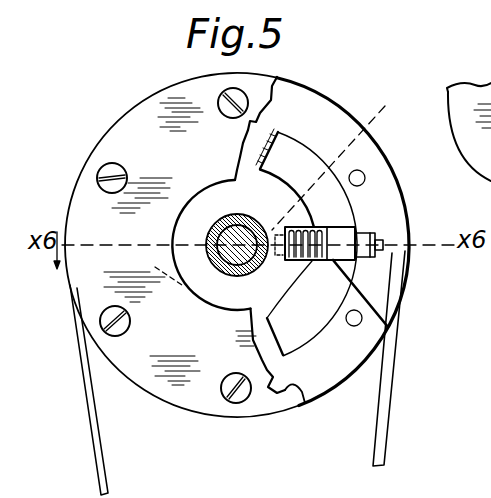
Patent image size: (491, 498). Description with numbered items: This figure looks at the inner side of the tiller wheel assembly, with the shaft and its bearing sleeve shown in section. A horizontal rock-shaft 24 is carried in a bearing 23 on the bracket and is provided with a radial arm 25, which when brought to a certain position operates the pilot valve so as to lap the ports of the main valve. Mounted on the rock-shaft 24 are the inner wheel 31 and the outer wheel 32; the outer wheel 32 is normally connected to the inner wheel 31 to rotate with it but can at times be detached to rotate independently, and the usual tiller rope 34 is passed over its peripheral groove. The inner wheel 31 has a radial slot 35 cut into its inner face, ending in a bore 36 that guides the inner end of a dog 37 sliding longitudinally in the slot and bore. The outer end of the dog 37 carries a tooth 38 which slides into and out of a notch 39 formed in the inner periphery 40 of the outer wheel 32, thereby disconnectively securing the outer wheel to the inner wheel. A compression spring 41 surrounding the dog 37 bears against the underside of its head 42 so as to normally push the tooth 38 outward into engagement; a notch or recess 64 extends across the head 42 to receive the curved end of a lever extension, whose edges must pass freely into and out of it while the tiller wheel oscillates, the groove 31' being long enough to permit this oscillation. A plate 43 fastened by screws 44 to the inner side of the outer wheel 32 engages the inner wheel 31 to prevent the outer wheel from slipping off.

The bearing 23 is at (225, 270).
The rock-shaft 24 is at (215, 265).
The radial arm 25 is at (469, 200).
The inner wheel 31 is at (316, 298).
The groove 31' is at (305, 289).
The outer wheel 32 is at (355, 346).
The tiller rope 34 is at (100, 437).
The radial slot 35 is at (305, 262).
The bore 36 is at (342, 159).
The dog 37 is at (357, 228).
The tooth 38 is at (365, 243).
The notch 39 is at (378, 253).
The inner periphery 40 is at (265, 131).
The compression spring 41 is at (312, 227).
The head 42 is at (352, 238).
The plate 43 is at (305, 405).
The screws 44 is at (258, 232).
The recess 64 is at (388, 327).